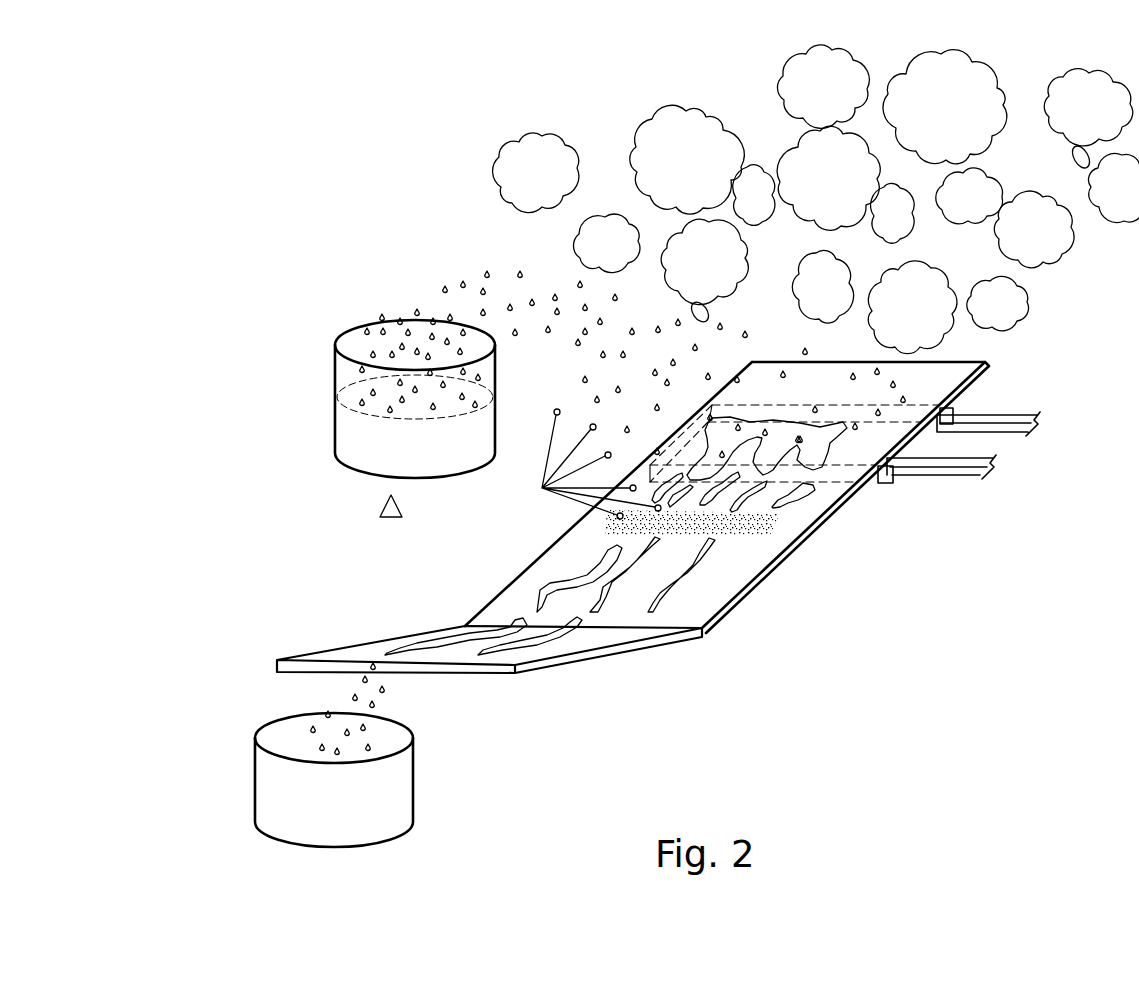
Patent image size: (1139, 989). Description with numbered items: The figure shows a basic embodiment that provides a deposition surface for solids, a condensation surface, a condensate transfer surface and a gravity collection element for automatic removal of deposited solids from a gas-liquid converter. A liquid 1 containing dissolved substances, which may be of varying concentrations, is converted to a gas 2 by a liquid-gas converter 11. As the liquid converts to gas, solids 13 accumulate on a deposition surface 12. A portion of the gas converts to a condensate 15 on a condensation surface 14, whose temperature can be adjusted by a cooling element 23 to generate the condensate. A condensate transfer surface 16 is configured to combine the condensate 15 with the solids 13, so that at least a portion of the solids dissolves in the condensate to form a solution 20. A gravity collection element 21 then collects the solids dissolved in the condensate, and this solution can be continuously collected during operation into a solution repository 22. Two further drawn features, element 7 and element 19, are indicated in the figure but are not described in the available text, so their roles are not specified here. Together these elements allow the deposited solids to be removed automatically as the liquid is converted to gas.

The liquid 1 is at (410, 452).
The gas 2 is at (687, 168).
The temperature difference 7 is at (380, 515).
The liquid-gas converter 11 is at (298, 332).
The deposition surface 12 is at (795, 528).
The solids 13 is at (642, 472).
The condensation surface 14 is at (878, 443).
The condensate 15 is at (820, 437).
The condensate transfer surface 16 is at (825, 492).
The collection step 19 is at (243, 607).
The solution 20 is at (563, 583).
The gravity collection element 21 is at (779, 609).
The solution repository 22 is at (365, 793).
The cooling element 23 is at (953, 415).